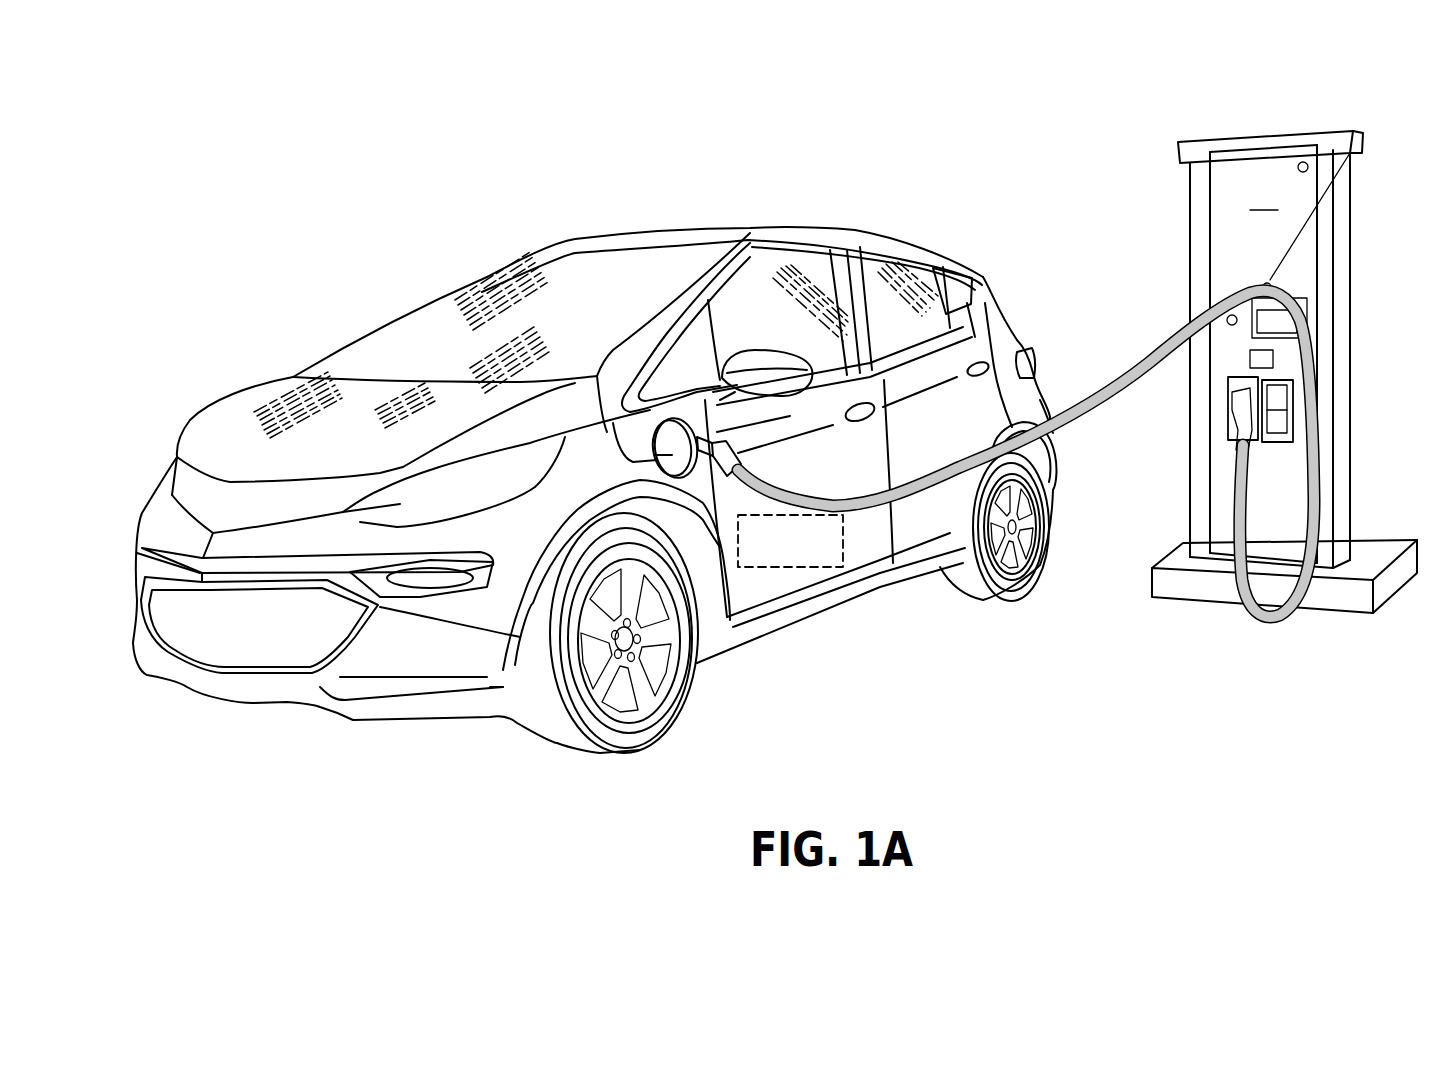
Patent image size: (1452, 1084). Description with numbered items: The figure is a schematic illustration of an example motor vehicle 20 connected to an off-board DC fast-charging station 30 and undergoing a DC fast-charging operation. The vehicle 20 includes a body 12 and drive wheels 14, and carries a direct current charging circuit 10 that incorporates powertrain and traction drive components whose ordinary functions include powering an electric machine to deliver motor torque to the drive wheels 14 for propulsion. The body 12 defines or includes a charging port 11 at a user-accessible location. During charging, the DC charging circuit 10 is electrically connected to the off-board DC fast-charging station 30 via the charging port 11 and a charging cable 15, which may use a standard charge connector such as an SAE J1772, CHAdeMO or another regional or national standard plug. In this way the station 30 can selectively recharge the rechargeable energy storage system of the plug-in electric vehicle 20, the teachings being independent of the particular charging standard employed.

The direct current (DC) charging circuit 10 is at (806, 552).
The charging port 11 is at (613, 423).
The body 12 is at (262, 383).
The drive wheels 14 is at (680, 707).
The charging cable 15 is at (1150, 357).
The motor vehicle 20 is at (890, 192).
The off-board DC fast-charging station 30 is at (1353, 247).